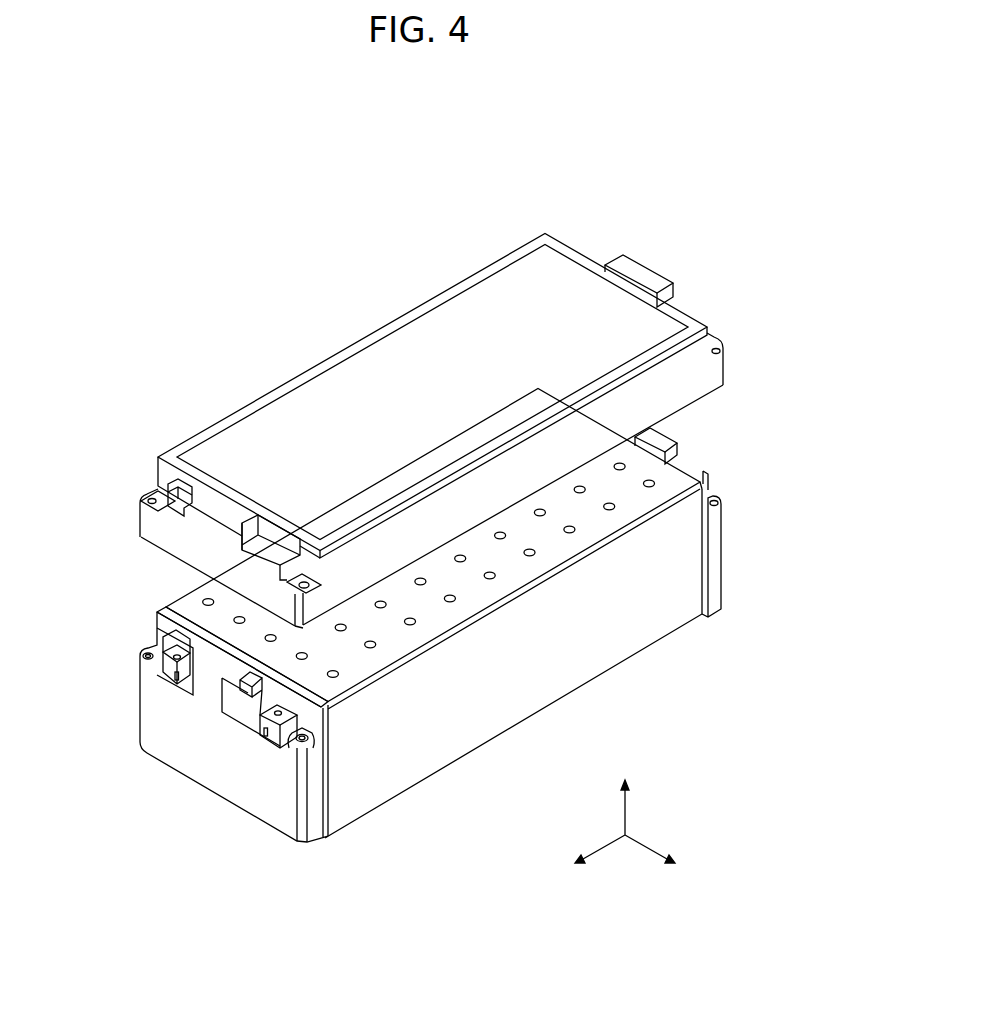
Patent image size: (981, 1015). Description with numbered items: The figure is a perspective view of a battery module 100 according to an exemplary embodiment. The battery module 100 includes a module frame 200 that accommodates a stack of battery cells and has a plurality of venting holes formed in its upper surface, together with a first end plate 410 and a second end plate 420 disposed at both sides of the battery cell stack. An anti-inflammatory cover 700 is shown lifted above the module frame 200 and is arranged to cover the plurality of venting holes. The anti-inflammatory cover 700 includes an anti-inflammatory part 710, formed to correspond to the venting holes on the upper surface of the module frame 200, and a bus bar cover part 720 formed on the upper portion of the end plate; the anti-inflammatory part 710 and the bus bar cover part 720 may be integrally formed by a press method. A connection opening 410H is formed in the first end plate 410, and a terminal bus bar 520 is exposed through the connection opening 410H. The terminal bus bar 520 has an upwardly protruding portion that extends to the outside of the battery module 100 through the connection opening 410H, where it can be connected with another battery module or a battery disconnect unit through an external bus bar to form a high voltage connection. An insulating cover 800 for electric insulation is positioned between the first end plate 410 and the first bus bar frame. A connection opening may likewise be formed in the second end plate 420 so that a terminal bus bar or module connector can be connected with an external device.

The battery module 100 is at (282, 240).
The module frame 200 is at (441, 735).
The first end plate 410 is at (198, 776).
The connection opening 410H is at (170, 684).
The second end plate 420 is at (719, 550).
The terminal bus bar 520 is at (172, 641).
The anti-inflammatory cover 700 is at (709, 405).
The anti-inflammatory part 710 is at (262, 421).
The bus bar cover part 720 is at (144, 498).
The insulating cover 800 is at (160, 675).